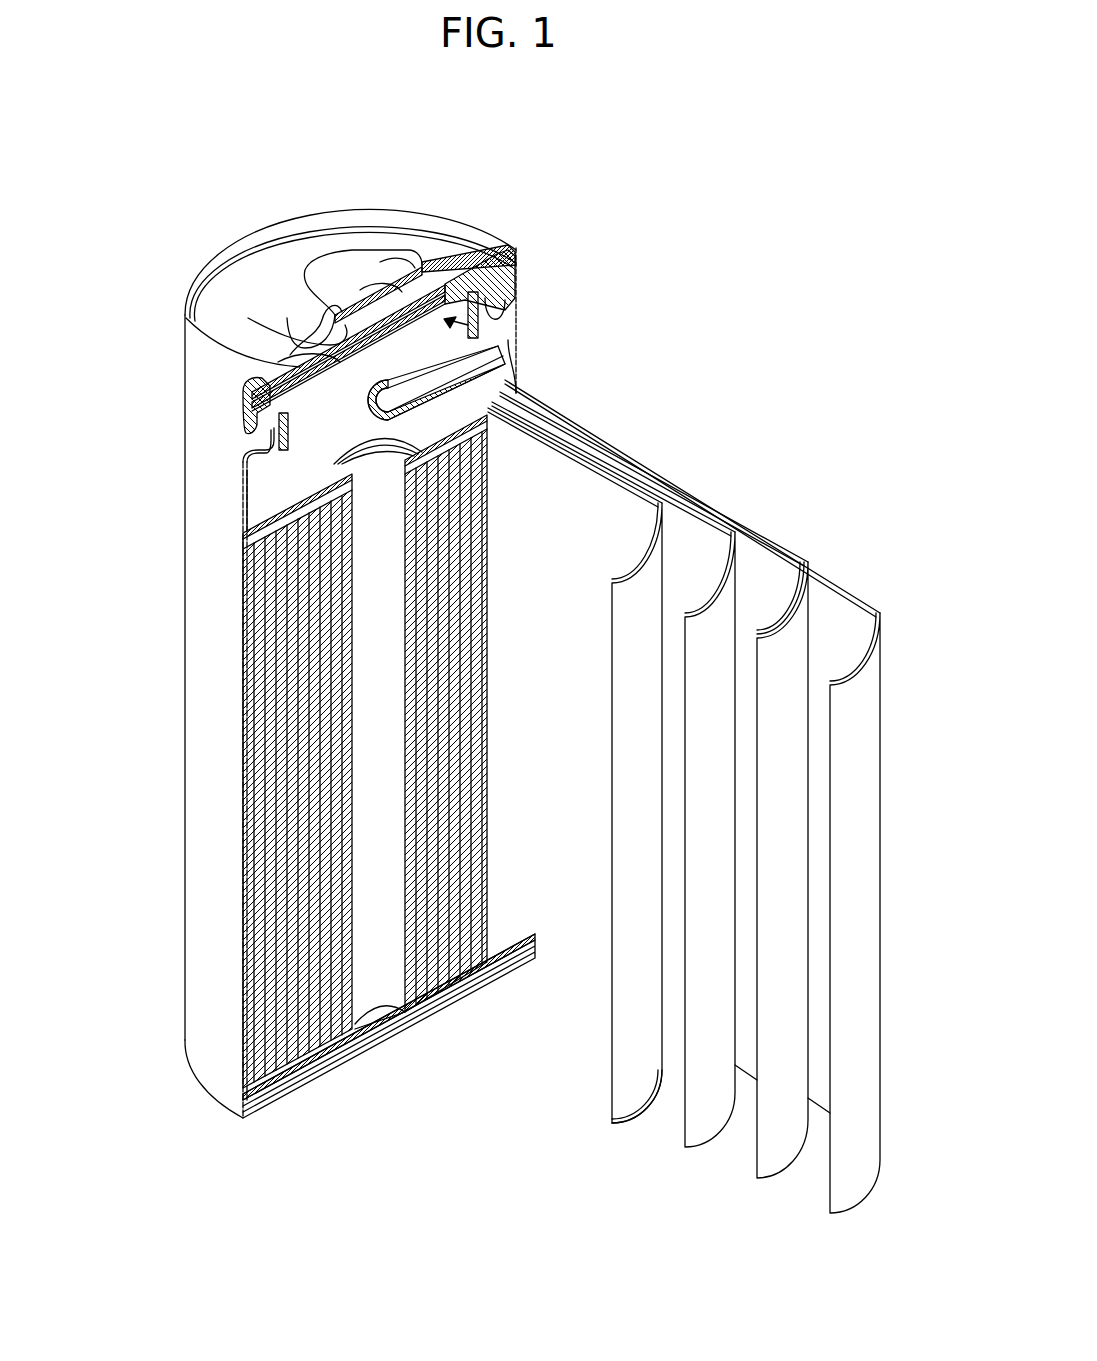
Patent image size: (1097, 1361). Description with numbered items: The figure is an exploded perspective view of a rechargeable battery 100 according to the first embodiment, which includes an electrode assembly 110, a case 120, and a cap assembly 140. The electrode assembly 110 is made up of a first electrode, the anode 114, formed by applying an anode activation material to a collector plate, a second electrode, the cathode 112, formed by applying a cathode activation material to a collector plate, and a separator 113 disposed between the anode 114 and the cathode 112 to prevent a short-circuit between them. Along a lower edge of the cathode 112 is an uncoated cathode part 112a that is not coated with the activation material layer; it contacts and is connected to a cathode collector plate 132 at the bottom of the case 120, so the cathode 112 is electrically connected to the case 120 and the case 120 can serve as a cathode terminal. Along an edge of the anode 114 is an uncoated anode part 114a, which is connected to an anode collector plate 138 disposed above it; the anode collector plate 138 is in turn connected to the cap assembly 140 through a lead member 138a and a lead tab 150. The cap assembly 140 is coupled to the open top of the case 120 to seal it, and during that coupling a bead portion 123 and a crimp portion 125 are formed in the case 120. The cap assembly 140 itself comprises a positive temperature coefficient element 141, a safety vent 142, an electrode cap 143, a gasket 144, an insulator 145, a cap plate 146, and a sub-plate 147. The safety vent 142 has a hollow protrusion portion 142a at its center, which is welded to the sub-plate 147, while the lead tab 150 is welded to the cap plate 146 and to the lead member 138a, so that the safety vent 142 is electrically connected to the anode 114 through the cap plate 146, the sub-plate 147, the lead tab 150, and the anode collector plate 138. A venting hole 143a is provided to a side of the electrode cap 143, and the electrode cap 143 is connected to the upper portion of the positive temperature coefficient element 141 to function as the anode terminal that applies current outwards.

The rechargeable battery 100 is at (399, 116).
The electrode assembly 110 is at (447, 976).
The second electrode (cathode) 112 is at (598, 1095).
The uncoated cathode part 112a is at (623, 1130).
The separator 113 is at (708, 1133).
The first electrode (anode) 114 is at (779, 1173).
The uncoated anode part 114a is at (766, 556).
The case 120 is at (190, 655).
The bead portion 123 is at (262, 446).
The crimp portion 125 is at (250, 413).
The cathode collector plate 132 is at (312, 1054).
The anode collector plate 138 is at (253, 495).
The lead member 138a is at (507, 384).
The cap assembly 140 is at (616, 357).
The positive temperature coefficient element 141 is at (513, 260).
The safety vent 142 is at (511, 271).
The protrusion portion 142a is at (278, 360).
The electrode cap 143 is at (406, 258).
The venting hole 143a is at (288, 316).
The gasket 144 is at (512, 240).
The insulator 145 is at (505, 310).
The cap plate 146 is at (472, 343).
The sub-plate 147 is at (430, 280).
The lead tab 150 is at (513, 352).